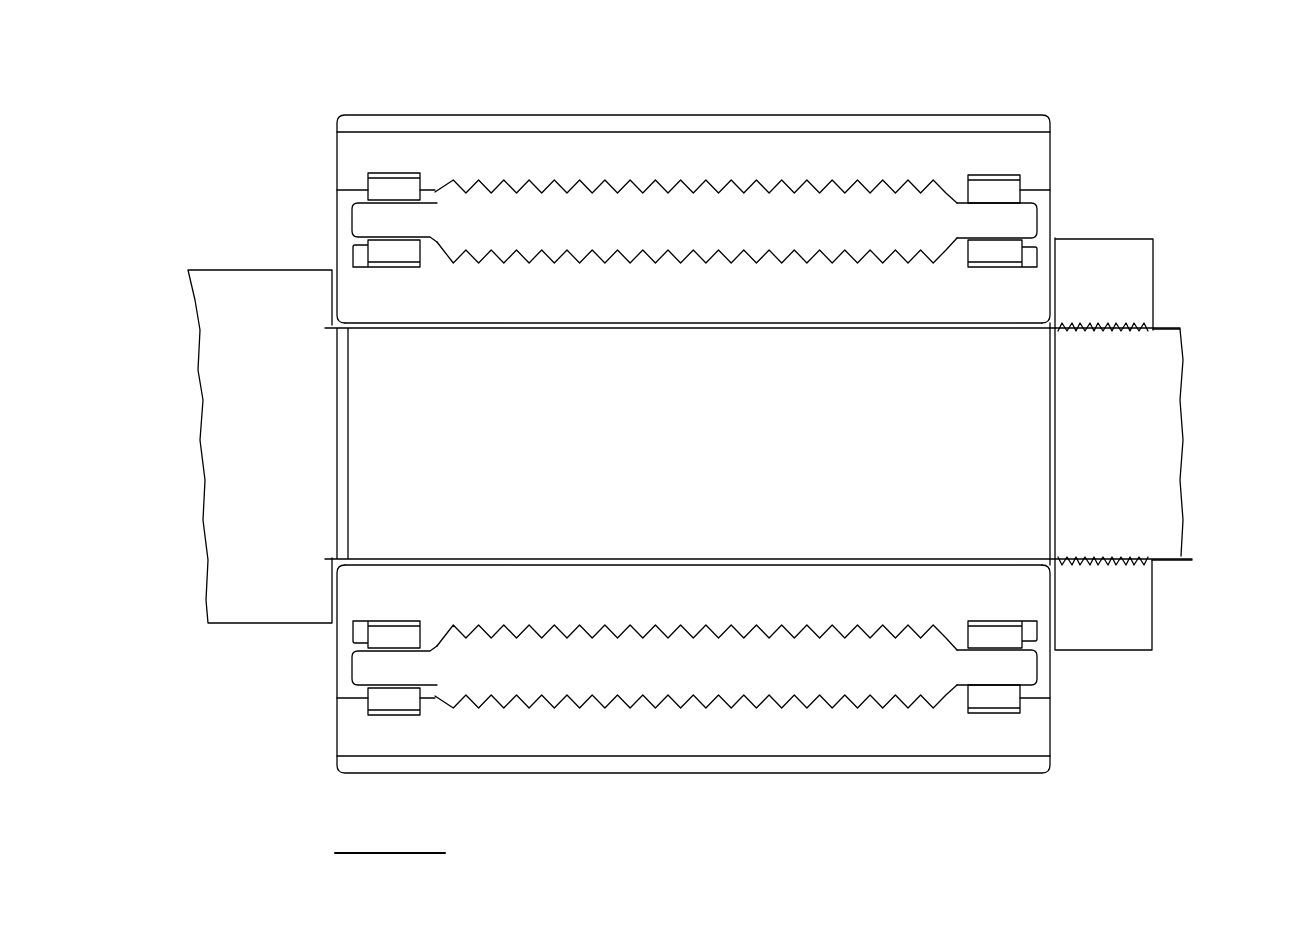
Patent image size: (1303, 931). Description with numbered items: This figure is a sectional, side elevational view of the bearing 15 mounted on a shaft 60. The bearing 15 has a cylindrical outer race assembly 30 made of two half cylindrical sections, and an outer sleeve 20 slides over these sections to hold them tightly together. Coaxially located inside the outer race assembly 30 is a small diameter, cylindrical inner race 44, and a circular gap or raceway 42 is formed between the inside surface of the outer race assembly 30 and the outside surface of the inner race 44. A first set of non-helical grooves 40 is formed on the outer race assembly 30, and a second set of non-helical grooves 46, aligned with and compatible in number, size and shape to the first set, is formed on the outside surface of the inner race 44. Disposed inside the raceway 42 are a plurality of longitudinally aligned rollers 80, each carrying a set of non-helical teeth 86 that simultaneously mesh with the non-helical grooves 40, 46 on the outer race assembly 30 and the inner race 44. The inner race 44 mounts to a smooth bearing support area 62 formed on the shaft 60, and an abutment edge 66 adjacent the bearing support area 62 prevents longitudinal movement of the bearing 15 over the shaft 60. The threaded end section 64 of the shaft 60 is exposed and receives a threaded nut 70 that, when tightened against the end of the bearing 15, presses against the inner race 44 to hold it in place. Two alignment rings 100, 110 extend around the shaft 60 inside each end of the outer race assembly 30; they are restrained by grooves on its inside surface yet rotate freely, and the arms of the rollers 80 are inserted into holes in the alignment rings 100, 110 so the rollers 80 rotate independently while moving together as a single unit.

The bearing 15 is at (365, 108).
The outer sleeve 20 is at (863, 118).
The outer race assembly 30 is at (357, 158).
The first set of non-helical grooves 40 is at (636, 181).
The raceway 42 is at (1046, 213).
The inner race 44 is at (707, 311).
The second set of non-helical grooves 46 is at (572, 262).
The shaft 60 is at (1177, 328).
The bearing support area 62 is at (700, 458).
The threaded end section 64 is at (1155, 463).
The abutment edge 66 is at (332, 578).
The threaded nut 70 is at (1150, 247).
The roller 80 is at (660, 238).
The non-helical teeth 86 is at (730, 187).
The alignment ring 100 is at (985, 176).
The alignment ring 110 is at (390, 188).